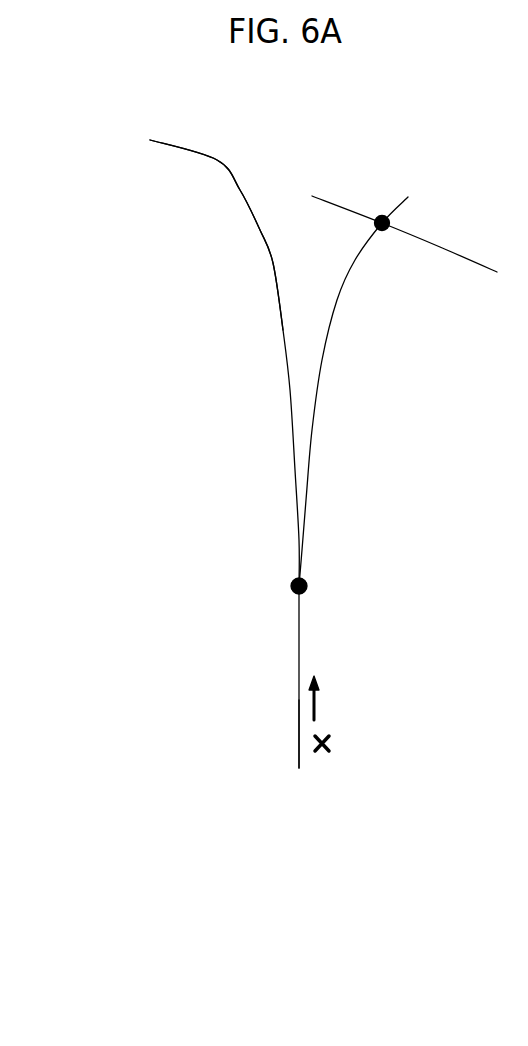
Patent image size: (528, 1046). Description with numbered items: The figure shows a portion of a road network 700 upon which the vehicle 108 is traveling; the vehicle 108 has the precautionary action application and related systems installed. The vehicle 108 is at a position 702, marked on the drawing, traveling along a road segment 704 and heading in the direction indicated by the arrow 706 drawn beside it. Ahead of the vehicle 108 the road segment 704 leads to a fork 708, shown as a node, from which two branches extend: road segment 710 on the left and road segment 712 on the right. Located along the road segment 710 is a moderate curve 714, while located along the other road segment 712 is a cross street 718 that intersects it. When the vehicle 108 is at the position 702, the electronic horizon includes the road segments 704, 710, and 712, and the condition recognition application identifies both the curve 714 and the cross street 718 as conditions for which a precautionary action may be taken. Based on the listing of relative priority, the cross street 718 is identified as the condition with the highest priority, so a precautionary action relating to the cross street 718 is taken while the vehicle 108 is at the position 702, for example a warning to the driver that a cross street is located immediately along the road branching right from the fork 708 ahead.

The road network 700 is at (310, 322).
The position 702 is at (280, 732).
The road segment 704 is at (298, 633).
The arrow 706 is at (330, 673).
The fork 708 is at (280, 570).
The road segment 710 is at (285, 383).
The road segment 712 is at (337, 307).
The curve 714 is at (216, 158).
The cross street 718 is at (466, 234).
The vehicle 108 is at (333, 730).